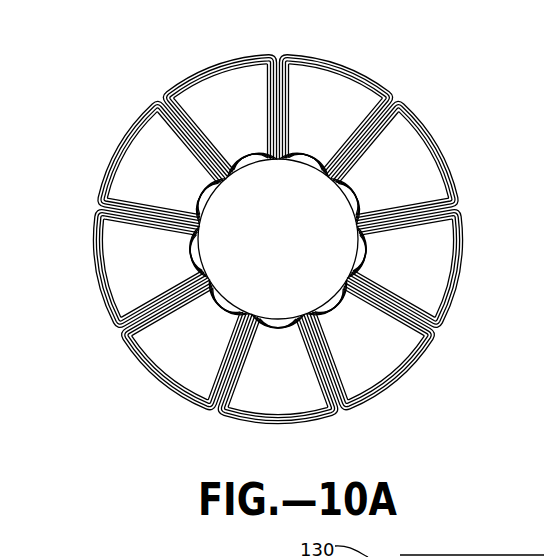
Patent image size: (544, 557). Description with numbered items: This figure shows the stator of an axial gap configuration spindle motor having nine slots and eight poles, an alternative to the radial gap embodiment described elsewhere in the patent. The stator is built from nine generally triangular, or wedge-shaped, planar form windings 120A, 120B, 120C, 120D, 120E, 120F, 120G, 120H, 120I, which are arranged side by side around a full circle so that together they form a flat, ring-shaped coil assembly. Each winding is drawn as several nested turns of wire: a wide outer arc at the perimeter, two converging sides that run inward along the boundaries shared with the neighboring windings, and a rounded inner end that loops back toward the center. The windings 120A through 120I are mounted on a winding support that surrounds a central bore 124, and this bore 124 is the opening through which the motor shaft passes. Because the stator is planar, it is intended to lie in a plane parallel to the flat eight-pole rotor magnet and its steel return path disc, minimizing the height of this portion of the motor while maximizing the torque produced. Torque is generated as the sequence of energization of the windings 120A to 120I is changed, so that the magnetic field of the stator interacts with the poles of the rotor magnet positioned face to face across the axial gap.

The bore 124 is at (313, 228).
The planar form winding 120A is at (319, 60).
The planar form winding 120B is at (419, 117).
The planar form winding 120C is at (463, 240).
The planar form winding 120D is at (429, 348).
The planar form winding 120E is at (314, 423).
The planar form winding 120F is at (197, 406).
The planar form winding 120G is at (93, 245).
The planar form winding 120H is at (132, 126).
The planar form winding 120I is at (193, 73).